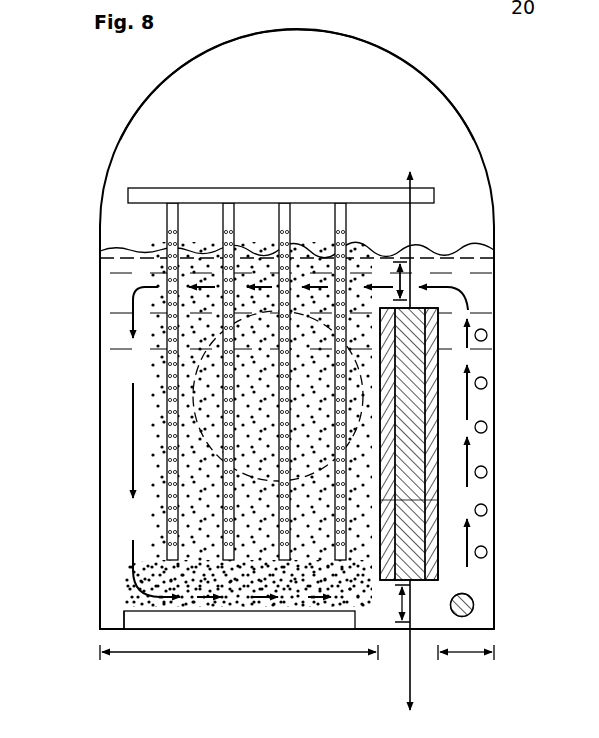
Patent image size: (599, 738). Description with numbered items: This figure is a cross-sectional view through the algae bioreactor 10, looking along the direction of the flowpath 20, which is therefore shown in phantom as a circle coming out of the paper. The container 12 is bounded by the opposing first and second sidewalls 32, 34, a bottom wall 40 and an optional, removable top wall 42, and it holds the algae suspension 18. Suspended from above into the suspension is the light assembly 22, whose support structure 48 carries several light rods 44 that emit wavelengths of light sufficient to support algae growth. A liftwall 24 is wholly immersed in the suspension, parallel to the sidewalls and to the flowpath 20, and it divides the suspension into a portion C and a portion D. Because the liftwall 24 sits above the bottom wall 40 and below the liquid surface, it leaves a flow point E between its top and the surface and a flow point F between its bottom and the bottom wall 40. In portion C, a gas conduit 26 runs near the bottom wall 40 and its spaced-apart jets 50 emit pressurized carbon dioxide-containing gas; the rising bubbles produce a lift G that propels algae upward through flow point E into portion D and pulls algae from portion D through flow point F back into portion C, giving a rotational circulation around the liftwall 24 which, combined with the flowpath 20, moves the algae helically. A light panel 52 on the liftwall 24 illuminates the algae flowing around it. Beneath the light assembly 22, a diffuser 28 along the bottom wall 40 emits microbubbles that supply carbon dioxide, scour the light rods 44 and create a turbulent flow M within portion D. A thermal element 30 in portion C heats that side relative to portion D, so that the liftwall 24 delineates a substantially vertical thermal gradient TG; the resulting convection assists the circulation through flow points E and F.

The algae bioreactor 10 is at (99, 110).
The container 12 is at (90, 238).
The algae suspension 18 is at (110, 292).
The flowpath 20 is at (195, 369).
The light assembly 22 is at (353, 174).
The liftwall 24 is at (418, 420).
The gas conduit 26 is at (473, 608).
The diffuser 28 is at (135, 620).
The thermal element 30 is at (487, 336).
The first sidewall 32 is at (494, 301).
The second sidewall 34 is at (100, 412).
The bottom wall 40 is at (263, 631).
The top wall 42 is at (404, 61).
The light rods 44 is at (180, 225).
The support structure 48 is at (128, 196).
The jets 50 is at (470, 597).
The light panel 52 is at (392, 508).
The thermal gradient TG is at (412, 223).
The flow point E is at (407, 279).
The lift G is at (469, 400).
The portion D is at (148, 654).
The turbulent flow M is at (238, 583).
The flow point F is at (401, 625).
The portion C is at (466, 655).